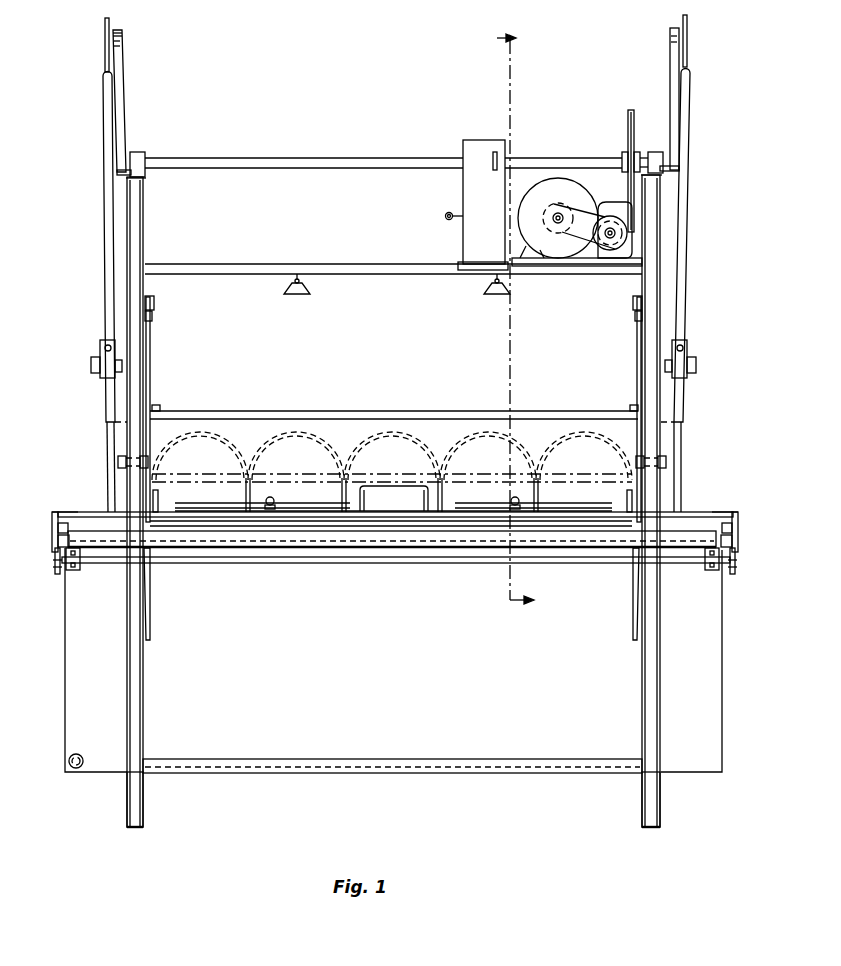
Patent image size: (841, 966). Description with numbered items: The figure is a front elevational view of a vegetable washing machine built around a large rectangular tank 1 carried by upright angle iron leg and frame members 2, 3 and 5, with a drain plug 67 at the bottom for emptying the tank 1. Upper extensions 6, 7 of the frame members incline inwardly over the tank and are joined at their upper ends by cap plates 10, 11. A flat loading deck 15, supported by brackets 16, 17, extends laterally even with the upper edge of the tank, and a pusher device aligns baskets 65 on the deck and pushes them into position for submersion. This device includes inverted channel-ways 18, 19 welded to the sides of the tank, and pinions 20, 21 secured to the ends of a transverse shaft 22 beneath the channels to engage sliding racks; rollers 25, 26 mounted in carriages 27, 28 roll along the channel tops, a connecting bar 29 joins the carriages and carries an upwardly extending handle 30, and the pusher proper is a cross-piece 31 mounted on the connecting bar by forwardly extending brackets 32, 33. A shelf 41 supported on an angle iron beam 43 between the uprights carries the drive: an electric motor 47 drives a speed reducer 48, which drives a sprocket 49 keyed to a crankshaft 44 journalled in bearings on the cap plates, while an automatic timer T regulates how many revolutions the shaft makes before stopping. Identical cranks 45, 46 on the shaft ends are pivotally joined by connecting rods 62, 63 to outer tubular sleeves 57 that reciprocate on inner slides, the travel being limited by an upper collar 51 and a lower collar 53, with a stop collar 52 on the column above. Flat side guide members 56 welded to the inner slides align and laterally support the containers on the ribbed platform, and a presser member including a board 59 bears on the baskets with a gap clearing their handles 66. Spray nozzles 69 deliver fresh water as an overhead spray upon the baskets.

The tank 1 is at (66, 700).
The leg and frame member 2 is at (127, 800).
The leg and frame member 3 is at (661, 803).
The leg and frame member 5 is at (514, 319).
The upper extension 6 is at (141, 228).
The upper extension 7 is at (662, 240).
The cap plate 10 is at (146, 180).
The cap plate 11 is at (664, 176).
The loading deck 15 is at (645, 524).
The bracket 16 is at (151, 598).
The bracket 17 is at (633, 576).
The inverted channel-way 18 is at (57, 542).
The inverted channel-way 19 is at (733, 542).
The pinion 20 is at (57, 570).
The pinion 21 is at (736, 570).
The transverse shaft 22 is at (360, 564).
The roller 25 is at (57, 527).
The roller 26 is at (733, 525).
The carriage 27 is at (53, 514).
The carriage 28 is at (737, 512).
The connecting bar 29 is at (88, 512).
The handle 30 is at (383, 486).
The cross-piece 31 is at (460, 512).
The bracket 32 is at (276, 504).
The bracket 33 is at (512, 504).
The shelf 41 is at (545, 268).
The angle iron beam 43 is at (353, 275).
The crankshaft 44 is at (347, 158).
The crank 45 is at (124, 101).
The crank 46 is at (670, 80).
The electric motor 47 is at (545, 194).
The speed reducer 48 is at (611, 203).
The sprocket 49 is at (628, 124).
The collar 51 is at (152, 315).
The stop collar 52 is at (154, 300).
The collar 53 is at (119, 460).
The side guide member 56 is at (160, 495).
The outer tubular sleeve 57 is at (150, 356).
The board 59 is at (416, 411).
The connecting rod 62 is at (103, 188).
The connecting rod 63 is at (687, 146).
The basket 65 is at (675, 480).
The handle 66 is at (289, 411).
The drain plug 67 is at (69, 760).
The spray nozzle 69 is at (296, 296).
The automatic timer T is at (463, 232).